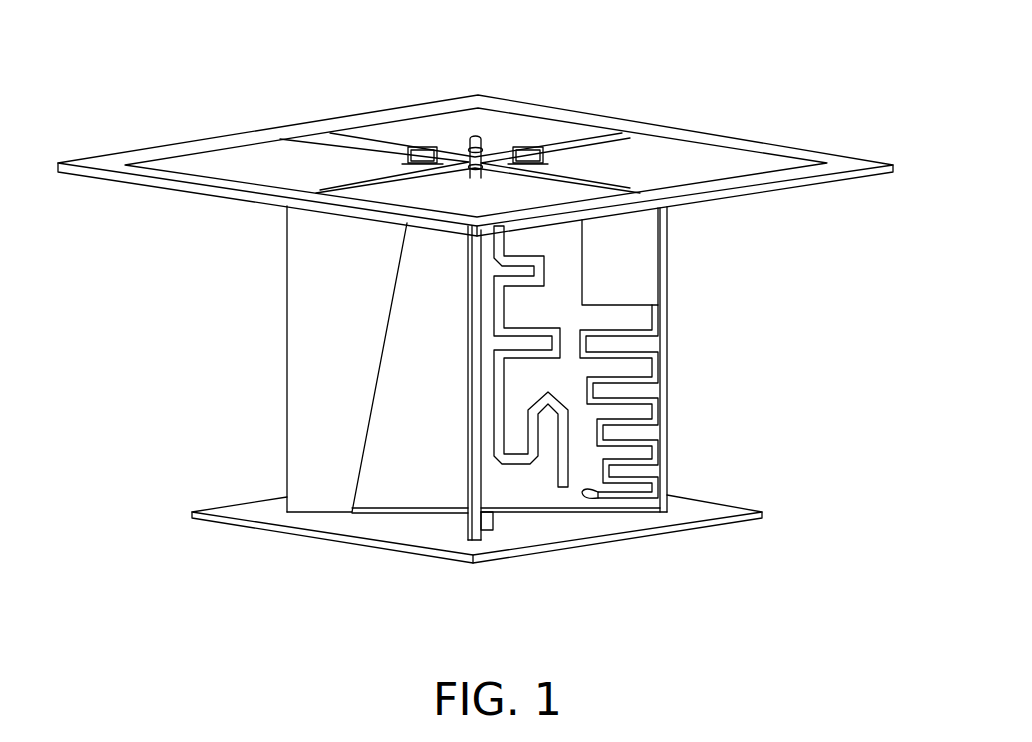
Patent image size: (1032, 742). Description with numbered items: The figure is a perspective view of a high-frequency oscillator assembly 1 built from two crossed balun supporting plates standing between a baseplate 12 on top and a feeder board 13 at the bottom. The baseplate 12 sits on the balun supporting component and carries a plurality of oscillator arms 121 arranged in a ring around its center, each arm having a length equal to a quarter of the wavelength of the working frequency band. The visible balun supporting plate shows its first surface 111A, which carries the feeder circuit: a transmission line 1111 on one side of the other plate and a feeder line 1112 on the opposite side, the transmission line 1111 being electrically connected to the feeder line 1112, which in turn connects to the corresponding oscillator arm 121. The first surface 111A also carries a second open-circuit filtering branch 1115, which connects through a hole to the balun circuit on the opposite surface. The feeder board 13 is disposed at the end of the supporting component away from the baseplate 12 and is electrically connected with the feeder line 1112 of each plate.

The high-frequency oscillator assembly 1 is at (71, 57).
The baseplate 12 is at (805, 152).
The oscillator arm 121 is at (670, 152).
The first surface 111A is at (665, 350).
The second open-circuit filtering branch 1115 is at (645, 267).
The transmission line 1111 is at (566, 490).
The feeder line 1112 is at (397, 345).
The feeder board 13 is at (707, 510).